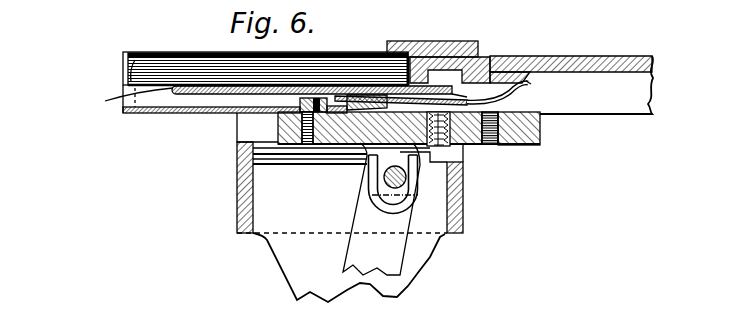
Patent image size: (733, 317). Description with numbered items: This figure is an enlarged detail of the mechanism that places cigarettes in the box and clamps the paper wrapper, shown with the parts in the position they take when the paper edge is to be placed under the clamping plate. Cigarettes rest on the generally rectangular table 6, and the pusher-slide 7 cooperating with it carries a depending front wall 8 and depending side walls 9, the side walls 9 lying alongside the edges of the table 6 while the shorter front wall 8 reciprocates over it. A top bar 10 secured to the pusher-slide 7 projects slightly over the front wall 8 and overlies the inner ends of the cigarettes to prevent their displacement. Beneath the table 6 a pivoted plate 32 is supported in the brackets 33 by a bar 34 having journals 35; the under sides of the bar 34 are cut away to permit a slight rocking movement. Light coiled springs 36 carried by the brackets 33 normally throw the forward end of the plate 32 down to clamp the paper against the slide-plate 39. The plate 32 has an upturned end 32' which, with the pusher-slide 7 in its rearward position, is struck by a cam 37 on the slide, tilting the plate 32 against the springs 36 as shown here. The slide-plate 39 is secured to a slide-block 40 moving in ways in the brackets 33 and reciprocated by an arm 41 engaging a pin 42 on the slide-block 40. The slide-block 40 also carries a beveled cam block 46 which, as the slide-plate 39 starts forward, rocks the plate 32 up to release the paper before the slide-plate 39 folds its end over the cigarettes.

The table 6 is at (130, 99).
The pusher-slide 7 is at (110, 82).
The front wall 8 is at (426, 57).
The side walls 9 is at (125, 58).
The top bar 10 is at (397, 41).
The pivoted plate 32 is at (319, 111).
The upturned end 32' is at (438, 95).
The brackets 33 is at (350, 207).
The bar 34 is at (350, 97).
The journals 35 is at (358, 95).
The coiled springs 36 is at (462, 145).
The cam 37 is at (510, 77).
The slide-plate 39 is at (166, 113).
The slide-block 40 is at (518, 145).
The arm 41 is at (381, 209).
The pin 42 is at (401, 187).
The cam block 46 is at (295, 100).